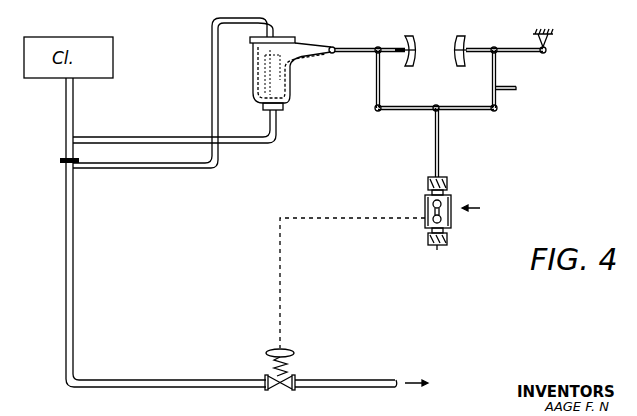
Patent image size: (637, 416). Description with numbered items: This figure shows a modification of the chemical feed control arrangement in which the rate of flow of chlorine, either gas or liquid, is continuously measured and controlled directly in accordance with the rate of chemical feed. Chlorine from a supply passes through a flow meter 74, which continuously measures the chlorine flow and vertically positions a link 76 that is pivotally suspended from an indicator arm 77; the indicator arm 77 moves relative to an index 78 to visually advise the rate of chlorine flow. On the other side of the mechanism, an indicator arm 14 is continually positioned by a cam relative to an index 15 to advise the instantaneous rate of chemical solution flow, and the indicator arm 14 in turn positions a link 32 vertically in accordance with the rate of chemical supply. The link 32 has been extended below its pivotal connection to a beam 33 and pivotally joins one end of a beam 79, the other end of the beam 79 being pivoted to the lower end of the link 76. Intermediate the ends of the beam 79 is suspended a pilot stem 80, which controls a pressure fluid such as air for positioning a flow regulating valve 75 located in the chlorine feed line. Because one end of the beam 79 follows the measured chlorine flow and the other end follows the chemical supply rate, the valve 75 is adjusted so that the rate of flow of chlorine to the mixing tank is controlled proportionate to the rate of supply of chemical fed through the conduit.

The indicator arm 14 is at (509, 36).
The index 15 is at (466, 40).
The link 32 is at (497, 80).
The beam 33 is at (505, 92).
The flow meter 74 is at (290, 86).
The valve 75 is at (292, 390).
The link 76 is at (376, 90).
The indicator arm 77 is at (349, 48).
The index 78 is at (408, 35).
The beam 79 is at (460, 111).
The pilot stem 80 is at (433, 150).